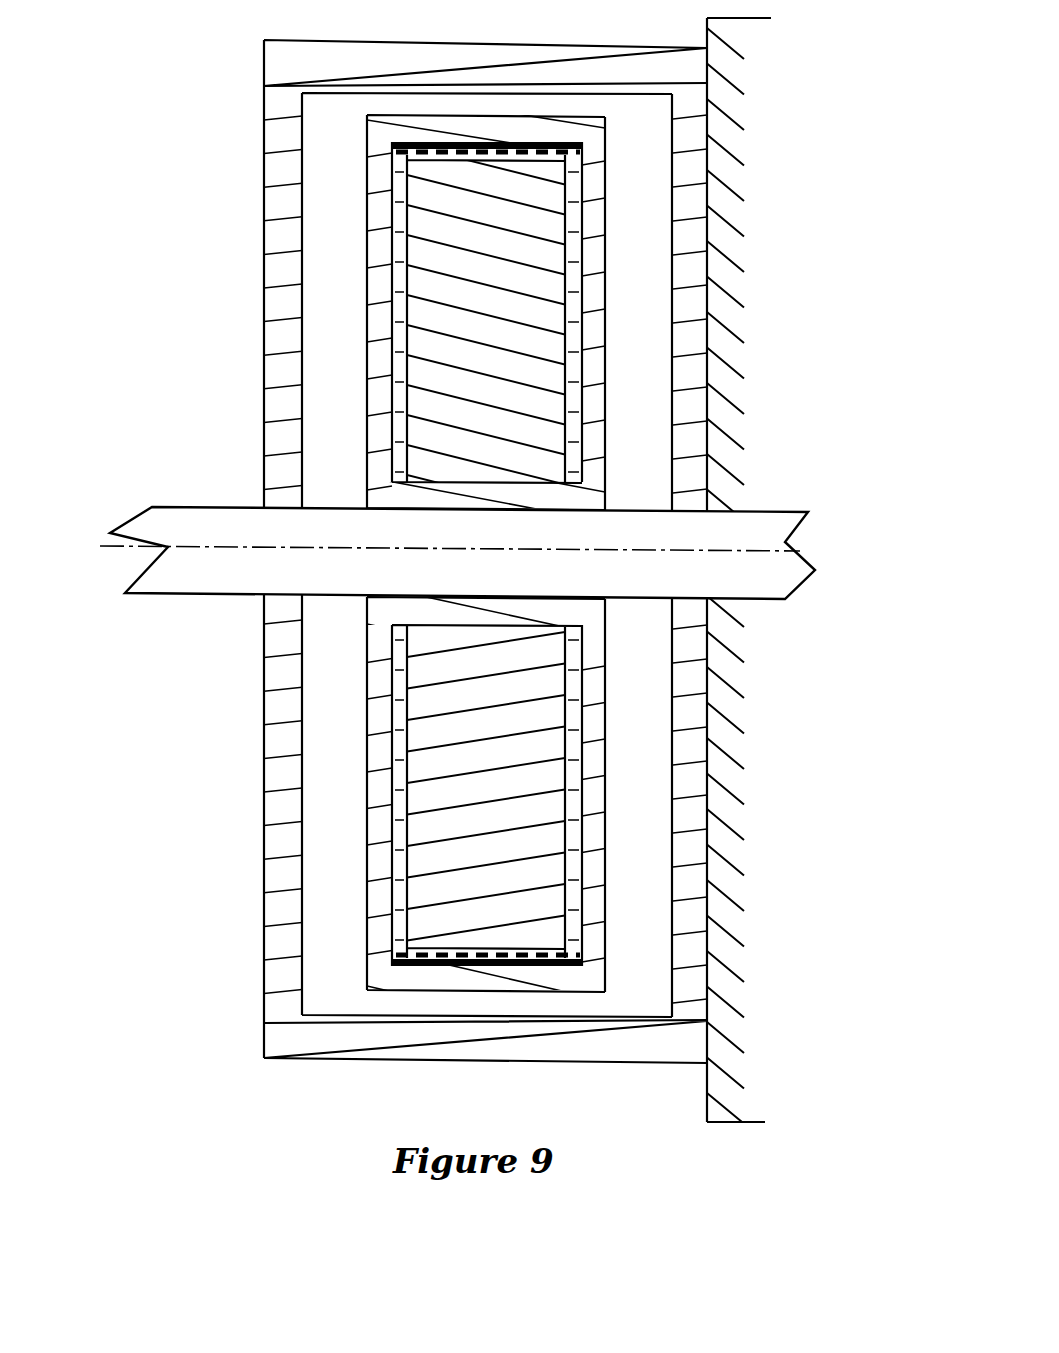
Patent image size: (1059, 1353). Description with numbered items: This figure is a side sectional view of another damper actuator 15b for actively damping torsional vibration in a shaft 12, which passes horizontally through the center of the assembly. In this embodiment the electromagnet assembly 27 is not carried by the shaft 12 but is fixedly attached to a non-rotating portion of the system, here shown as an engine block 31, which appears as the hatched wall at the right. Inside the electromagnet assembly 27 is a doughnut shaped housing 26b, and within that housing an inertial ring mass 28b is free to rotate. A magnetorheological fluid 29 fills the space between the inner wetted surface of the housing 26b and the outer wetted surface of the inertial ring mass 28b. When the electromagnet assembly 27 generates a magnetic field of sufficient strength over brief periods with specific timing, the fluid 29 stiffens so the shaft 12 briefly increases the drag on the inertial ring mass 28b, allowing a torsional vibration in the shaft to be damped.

The shaft 12 is at (190, 505).
The electromagnet assembly 27 is at (263, 212).
The engine block 31 is at (705, 1092).
The damper actuator 15b is at (252, 1048).
The housing 26b is at (363, 930).
The inertial ring mass 28b is at (410, 743).
The magnetorheological fluid 29 is at (403, 813).